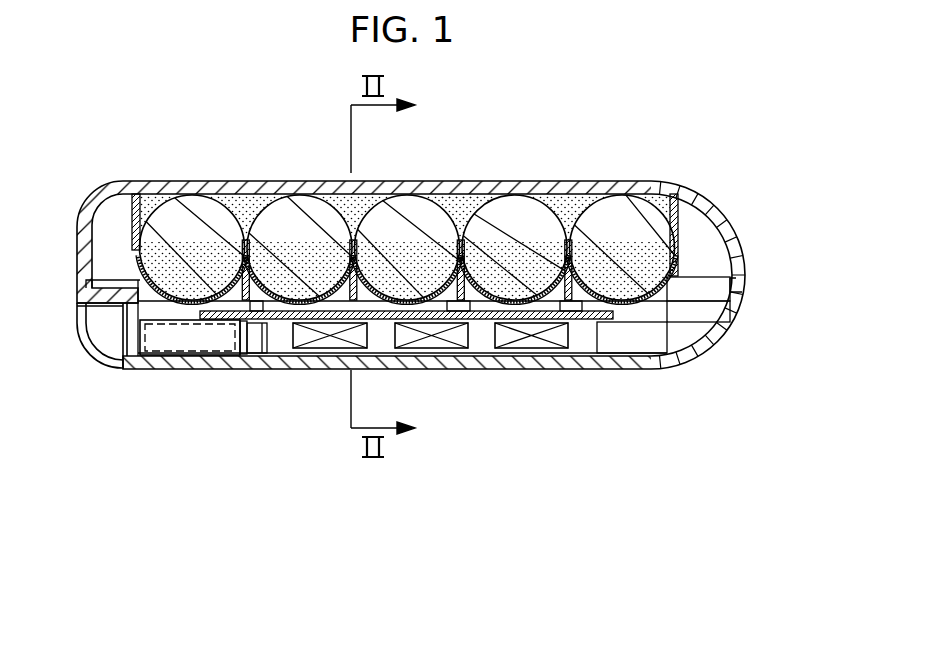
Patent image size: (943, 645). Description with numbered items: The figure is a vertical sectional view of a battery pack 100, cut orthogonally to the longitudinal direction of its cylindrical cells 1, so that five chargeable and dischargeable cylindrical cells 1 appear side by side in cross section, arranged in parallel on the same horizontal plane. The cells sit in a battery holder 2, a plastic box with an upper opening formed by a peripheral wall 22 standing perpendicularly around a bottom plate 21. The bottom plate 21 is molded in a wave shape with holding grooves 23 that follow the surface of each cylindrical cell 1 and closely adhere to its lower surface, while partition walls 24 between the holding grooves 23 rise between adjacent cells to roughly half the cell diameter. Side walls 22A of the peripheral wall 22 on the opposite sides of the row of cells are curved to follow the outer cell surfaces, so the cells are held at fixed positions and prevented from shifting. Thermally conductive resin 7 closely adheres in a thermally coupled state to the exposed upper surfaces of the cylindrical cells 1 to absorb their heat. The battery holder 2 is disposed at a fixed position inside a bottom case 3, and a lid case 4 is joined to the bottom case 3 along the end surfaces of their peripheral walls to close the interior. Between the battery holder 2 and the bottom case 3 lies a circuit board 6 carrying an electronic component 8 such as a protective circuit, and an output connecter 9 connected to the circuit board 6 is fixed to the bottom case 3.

The battery pack 100 is at (690, 121).
The cylindrical cell 1 is at (195, 225).
The battery holder 2 is at (55, 565).
The bottom case 3 is at (488, 363).
The lid case 4 is at (457, 192).
The circuit board 6 is at (228, 312).
The thermally conductive resin 7 is at (237, 210).
The electronic component 8 is at (427, 346).
The output connecter 9 is at (175, 345).
The bottom plate 21 is at (262, 301).
The peripheral wall 22 is at (411, 275).
The side wall 22A is at (125, 222).
The holding groove 23 is at (300, 301).
The partition wall 24 is at (278, 208).